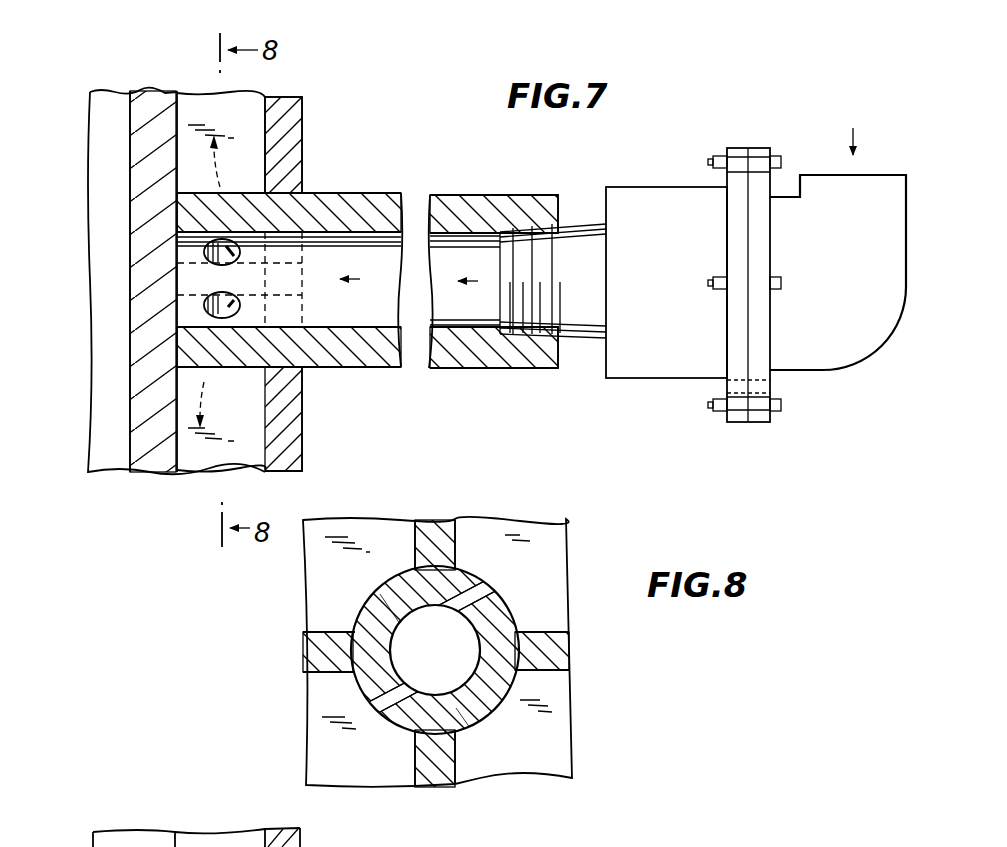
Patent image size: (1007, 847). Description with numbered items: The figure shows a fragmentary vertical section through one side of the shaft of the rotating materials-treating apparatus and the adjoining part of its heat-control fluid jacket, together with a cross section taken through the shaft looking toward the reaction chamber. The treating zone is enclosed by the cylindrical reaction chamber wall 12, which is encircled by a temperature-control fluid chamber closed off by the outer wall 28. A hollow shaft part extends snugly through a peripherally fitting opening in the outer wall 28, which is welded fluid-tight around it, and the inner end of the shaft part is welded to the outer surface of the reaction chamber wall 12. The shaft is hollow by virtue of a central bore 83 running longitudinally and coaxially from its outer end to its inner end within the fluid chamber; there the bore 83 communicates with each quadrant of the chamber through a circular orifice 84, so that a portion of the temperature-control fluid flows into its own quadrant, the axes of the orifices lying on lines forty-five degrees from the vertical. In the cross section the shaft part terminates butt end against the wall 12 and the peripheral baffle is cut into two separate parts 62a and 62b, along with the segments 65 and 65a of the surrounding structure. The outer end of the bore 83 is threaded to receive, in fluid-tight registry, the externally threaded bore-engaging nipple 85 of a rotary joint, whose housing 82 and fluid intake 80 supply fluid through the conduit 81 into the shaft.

In FIG. 7, the reaction chamber wall 12 is at (150, 452).
In FIG. 8, the reaction chamber wall 12 is at (390, 525).
In FIG. 7, the temperature-control fluid chamber outer wall 28 is at (288, 127).
In FIG. 7, the baffle part 62a is at (187, 283).
In FIG. 8, the baffle part 62a is at (555, 653).
In FIG. 8, the baffle part 62b is at (312, 650).
In FIG. 8, the liner segment 65 is at (445, 530).
In FIG. 8, the liner segment 65a is at (452, 773).
In FIG. 7, the fluid intake 80 is at (880, 176).
In FIG. 7, the conduit 81 is at (378, 193).
In FIG. 7, the blower housing 82 is at (688, 392).
In FIG. 7, the central bore 83 is at (378, 317).
In FIG. 7, the circular orifice 84 is at (236, 312).
In FIG. 8, the circular orifice 84 is at (397, 695).
In FIG. 7, the bore-engaging nipple 85 is at (590, 343).